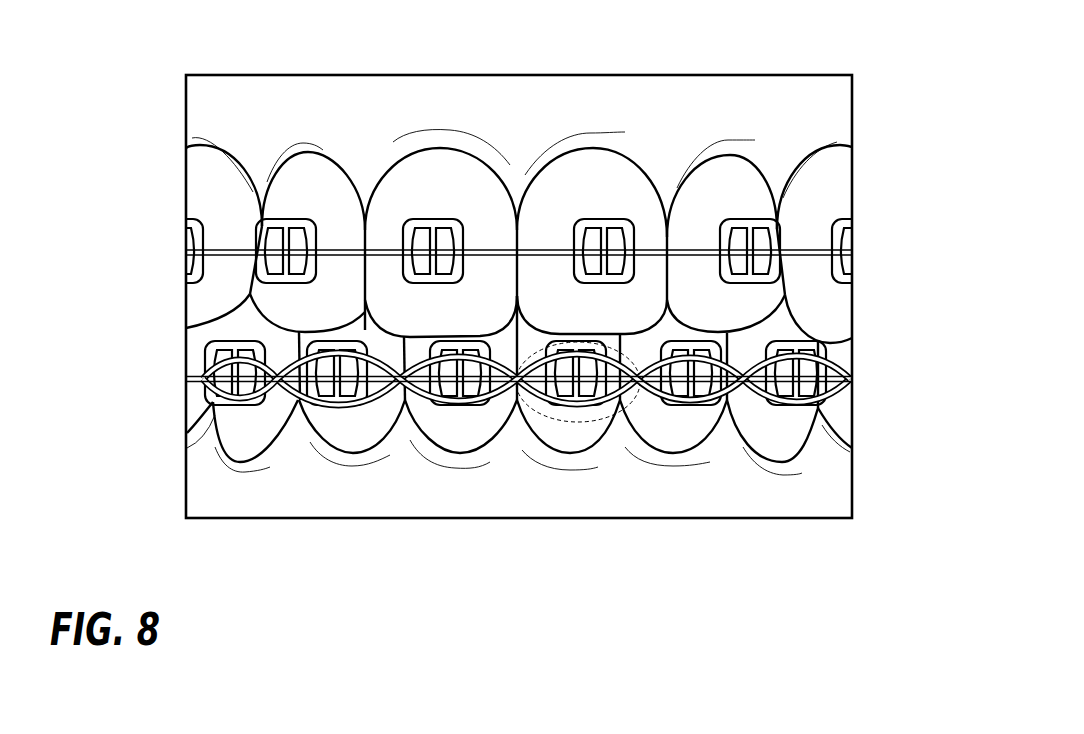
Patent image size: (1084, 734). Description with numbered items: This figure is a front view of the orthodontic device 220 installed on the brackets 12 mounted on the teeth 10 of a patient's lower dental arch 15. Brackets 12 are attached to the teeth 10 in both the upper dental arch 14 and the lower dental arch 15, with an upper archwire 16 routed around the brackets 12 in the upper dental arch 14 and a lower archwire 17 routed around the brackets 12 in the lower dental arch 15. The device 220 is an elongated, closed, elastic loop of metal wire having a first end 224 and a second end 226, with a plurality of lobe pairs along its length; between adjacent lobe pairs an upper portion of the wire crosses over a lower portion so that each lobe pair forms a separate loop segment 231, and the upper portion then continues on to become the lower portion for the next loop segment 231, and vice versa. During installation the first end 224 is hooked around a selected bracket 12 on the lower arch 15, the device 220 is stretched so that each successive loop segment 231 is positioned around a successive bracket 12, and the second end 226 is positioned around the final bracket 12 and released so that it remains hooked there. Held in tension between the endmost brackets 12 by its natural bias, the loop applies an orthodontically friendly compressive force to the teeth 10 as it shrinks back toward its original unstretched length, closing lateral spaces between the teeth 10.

The teeth 10 is at (287, 168).
The orthodontic brackets 12 is at (290, 228).
The upper dental arch 14 is at (145, 205).
The lower dental arch 15 is at (145, 397).
The upper archwire 16 is at (798, 260).
The lower archwire 17 is at (773, 400).
The orthodontic device 220 is at (212, 357).
The first end 224 is at (203, 378).
The second end 226 is at (850, 373).
The loop segment 231 is at (550, 417).